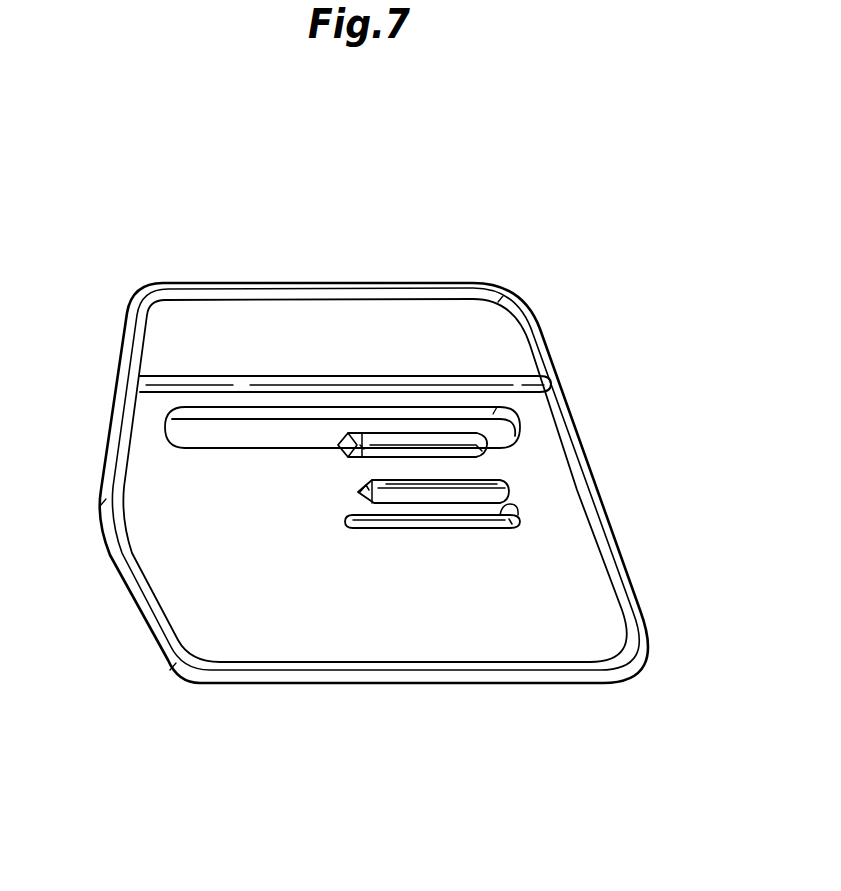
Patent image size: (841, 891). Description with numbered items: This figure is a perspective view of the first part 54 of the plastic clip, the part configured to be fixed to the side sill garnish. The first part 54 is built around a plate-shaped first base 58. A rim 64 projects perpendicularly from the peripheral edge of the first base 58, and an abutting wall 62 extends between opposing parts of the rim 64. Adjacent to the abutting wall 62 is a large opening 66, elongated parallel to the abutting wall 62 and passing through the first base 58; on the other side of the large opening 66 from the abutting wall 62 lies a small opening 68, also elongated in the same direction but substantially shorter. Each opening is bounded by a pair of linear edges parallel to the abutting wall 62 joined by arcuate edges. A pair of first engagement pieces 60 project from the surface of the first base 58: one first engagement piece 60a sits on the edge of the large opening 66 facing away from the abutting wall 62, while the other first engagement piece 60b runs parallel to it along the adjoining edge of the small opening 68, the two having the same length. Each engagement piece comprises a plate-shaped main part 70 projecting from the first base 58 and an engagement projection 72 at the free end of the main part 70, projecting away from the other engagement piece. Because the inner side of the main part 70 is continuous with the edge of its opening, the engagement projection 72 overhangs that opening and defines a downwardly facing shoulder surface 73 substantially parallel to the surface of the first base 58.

The first part 54 is at (550, 275).
The first base 58 is at (360, 316).
The first engagement pieces 60 is at (674, 429).
The one first engagement piece 60a is at (496, 455).
The other first engagement piece 60b is at (521, 491).
The abutting wall 62 is at (531, 380).
The rim 64 is at (542, 335).
The large opening 66 is at (216, 417).
The small opening 68 is at (513, 521).
The main part 70 is at (358, 494).
The engagement projection 72 is at (407, 493).
The shoulder surface 73 is at (341, 436).